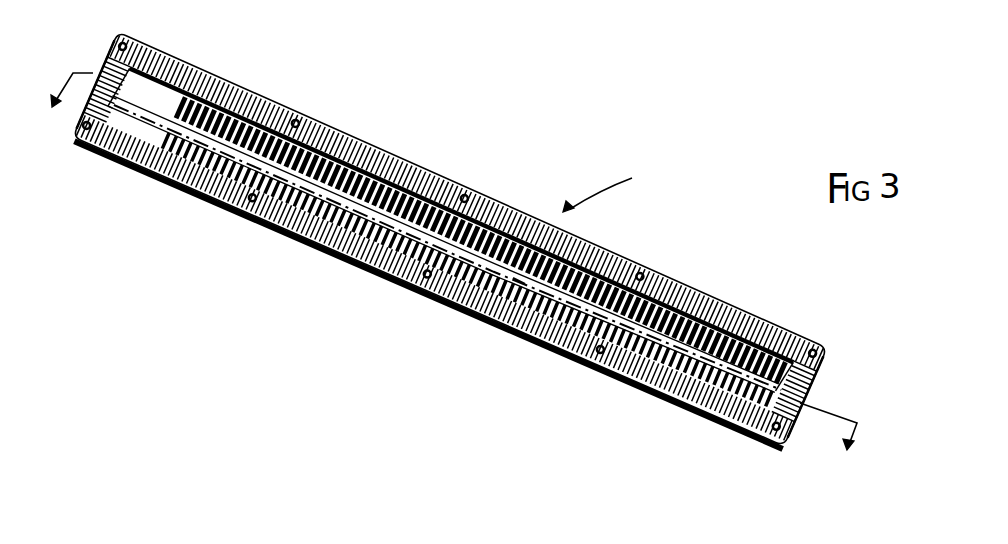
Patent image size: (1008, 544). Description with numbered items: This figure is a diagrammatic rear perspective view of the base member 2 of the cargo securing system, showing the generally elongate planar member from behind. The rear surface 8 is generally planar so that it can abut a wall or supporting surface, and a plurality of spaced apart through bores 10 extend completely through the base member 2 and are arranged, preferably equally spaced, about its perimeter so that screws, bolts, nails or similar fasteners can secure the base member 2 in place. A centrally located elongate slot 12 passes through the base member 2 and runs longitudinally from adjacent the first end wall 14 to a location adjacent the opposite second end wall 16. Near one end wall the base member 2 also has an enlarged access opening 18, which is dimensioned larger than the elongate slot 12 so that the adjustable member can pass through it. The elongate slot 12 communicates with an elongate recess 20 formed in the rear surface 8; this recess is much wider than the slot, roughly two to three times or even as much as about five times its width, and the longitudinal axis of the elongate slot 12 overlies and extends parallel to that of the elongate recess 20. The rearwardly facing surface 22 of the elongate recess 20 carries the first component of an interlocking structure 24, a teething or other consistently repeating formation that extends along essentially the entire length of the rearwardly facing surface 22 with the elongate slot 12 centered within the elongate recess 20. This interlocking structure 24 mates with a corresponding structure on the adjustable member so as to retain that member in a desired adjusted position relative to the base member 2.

The base member 2 is at (445, 278).
The rear surface 8 is at (728, 307).
The through bores 10 is at (297, 120).
The elongate slot 12 is at (518, 282).
The first end wall 14 is at (93, 75).
The second end wall 16 is at (797, 420).
The access opening 18 is at (150, 100).
The elongate recess 20 is at (414, 196).
The rearwardly facing surface 22 is at (369, 150).
The interlocking structure 24 is at (623, 257).